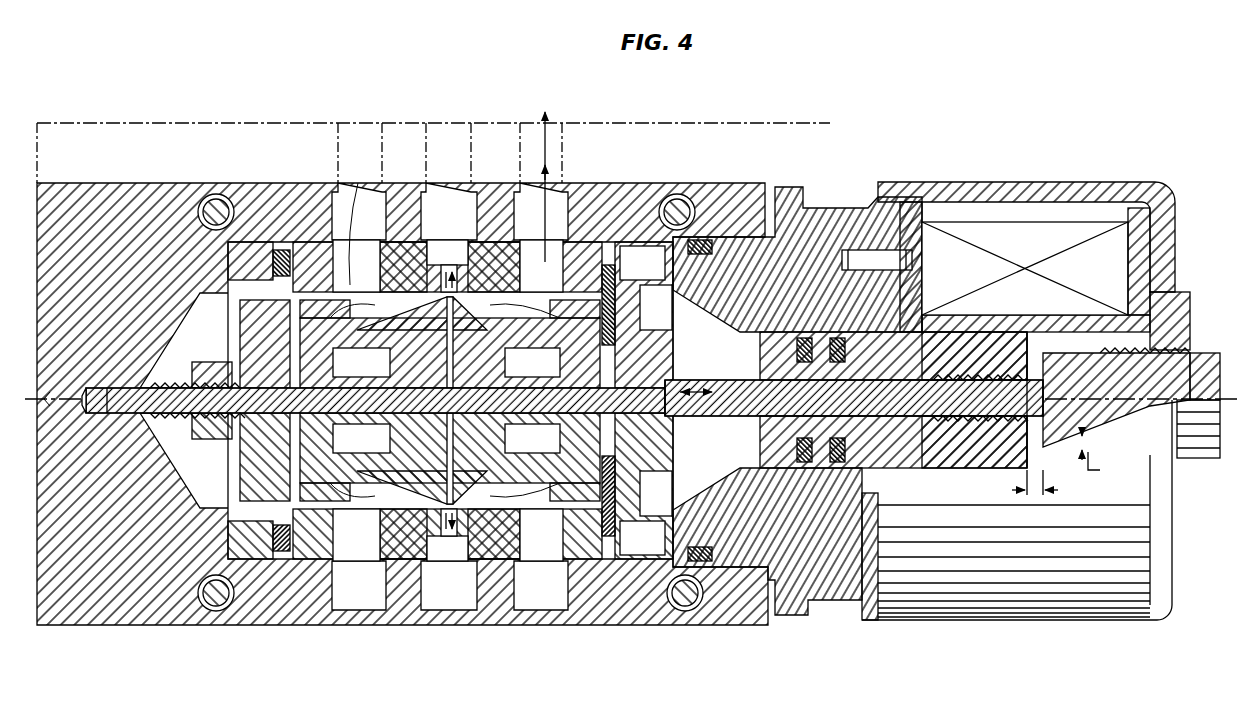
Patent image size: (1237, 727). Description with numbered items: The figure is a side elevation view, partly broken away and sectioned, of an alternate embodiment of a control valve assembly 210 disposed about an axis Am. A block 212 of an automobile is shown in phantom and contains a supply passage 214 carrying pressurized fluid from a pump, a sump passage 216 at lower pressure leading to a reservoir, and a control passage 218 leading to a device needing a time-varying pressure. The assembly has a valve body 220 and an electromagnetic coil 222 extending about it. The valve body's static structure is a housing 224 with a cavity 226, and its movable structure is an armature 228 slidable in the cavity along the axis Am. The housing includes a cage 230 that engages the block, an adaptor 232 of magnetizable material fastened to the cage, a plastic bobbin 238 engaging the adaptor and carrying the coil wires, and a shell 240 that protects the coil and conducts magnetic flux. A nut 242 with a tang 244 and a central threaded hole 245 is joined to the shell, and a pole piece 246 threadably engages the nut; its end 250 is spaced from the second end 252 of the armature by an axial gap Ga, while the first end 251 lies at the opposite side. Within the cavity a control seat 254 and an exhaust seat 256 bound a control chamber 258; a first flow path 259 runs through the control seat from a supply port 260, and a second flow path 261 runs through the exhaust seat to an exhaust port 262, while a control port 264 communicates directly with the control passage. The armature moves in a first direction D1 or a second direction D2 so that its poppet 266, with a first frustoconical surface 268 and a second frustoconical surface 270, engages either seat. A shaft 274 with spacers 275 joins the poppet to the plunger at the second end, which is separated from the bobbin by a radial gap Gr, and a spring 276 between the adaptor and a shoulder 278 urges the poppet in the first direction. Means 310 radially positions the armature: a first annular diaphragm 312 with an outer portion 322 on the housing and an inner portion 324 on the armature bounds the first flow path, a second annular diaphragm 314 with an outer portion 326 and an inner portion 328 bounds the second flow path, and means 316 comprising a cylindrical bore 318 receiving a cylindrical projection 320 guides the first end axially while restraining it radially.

The control valve assembly 210 is at (905, 80).
The block 212 is at (238, 122).
The supply passage 214 is at (352, 123).
The sump passage 216 is at (562, 123).
The control passage 218 is at (437, 123).
The valve body 220 is at (995, 180).
The electromagnetic coil 222 is at (1090, 222).
The housing 224 is at (818, 178).
The cavity 226 is at (712, 247).
The armature 228 is at (690, 470).
The cage 230 is at (255, 181).
The adaptor 232 is at (843, 252).
The bobbin 238 is at (1142, 210).
The shell 240 is at (1038, 182).
The nut 242 is at (1195, 330).
The tang 244 is at (1155, 306).
The threaded hole 245 is at (1230, 352).
The pole piece 246 is at (1098, 412).
The end 250 is at (1040, 335).
The first end 251 is at (262, 345).
The second end 252 is at (1030, 350).
The control seat 254 is at (359, 216).
The exhaust seat 256 is at (541, 216).
The control chamber 258 is at (447, 240).
The first flow path for fluid 259 is at (359, 180).
The supply port 260 is at (365, 275).
The second flow path for fluid 261 is at (545, 122).
The exhaust port 262 is at (530, 275).
The control port 264 is at (452, 218).
The poppet 266 is at (450, 342).
The first frustoconical surface 268 is at (410, 300).
The second frustoconical surface 270 is at (488, 302).
The shaft 274 is at (752, 382).
The spacers 275 is at (245, 478).
The spring 276 is at (821, 397).
The shoulder 278 is at (790, 452).
The means for radially positioning the armature 310 is at (130, 388).
The first annular diaphragm 312 is at (262, 290).
The second annular diaphragm 314 is at (648, 294).
The means for adapting the housing to slidably engage the first end 316 is at (118, 425).
The cylindrical bore 318 is at (84, 396).
The cylindrical projection 320 is at (195, 375).
The outer portion 322 is at (273, 260).
The inner portion 324 is at (292, 322).
The outer portion 326 is at (628, 262).
The inner portion 328 is at (614, 322).
The axis Am is at (59, 410).
The first direction D1 is at (685, 393).
The second direction D2 is at (700, 398).
The axial gap Ga is at (1023, 485).
The radial gap Gr is at (1105, 454).